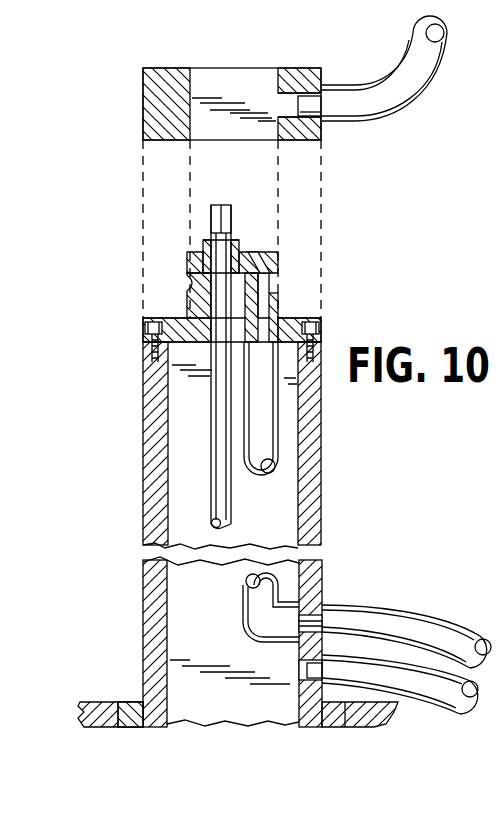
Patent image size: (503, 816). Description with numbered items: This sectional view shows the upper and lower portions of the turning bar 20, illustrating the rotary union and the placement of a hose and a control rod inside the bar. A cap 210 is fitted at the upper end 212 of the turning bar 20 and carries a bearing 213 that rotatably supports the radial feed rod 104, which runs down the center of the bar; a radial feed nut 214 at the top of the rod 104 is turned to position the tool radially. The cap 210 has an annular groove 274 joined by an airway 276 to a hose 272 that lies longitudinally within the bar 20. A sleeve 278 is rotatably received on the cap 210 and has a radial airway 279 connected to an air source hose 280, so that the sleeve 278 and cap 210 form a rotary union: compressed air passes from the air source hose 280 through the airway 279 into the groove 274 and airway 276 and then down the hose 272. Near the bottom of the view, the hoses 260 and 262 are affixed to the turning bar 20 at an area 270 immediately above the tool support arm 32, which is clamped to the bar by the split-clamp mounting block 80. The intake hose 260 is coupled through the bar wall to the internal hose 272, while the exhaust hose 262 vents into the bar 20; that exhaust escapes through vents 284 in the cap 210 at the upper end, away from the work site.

The turning bar 20 is at (194, 433).
The tool support arm 32 is at (102, 701).
The split-clamp mounting block 80 is at (137, 701).
The radial feed rod 104 is at (210, 492).
The cap 210 is at (142, 334).
The upper end 212 is at (143, 391).
The bearing 213 is at (203, 249).
The radial feed nut 214 is at (231, 207).
The hose 260 is at (473, 636).
The hose 262 is at (455, 708).
The area 270 is at (348, 598).
The hose 272 is at (280, 431).
The annular groove 274 is at (192, 280).
The airway 276 is at (260, 316).
The sleeve 278 is at (143, 130).
The radial airway 279 is at (293, 97).
The air source hose 280 is at (433, 92).
The vents 284 is at (260, 251).